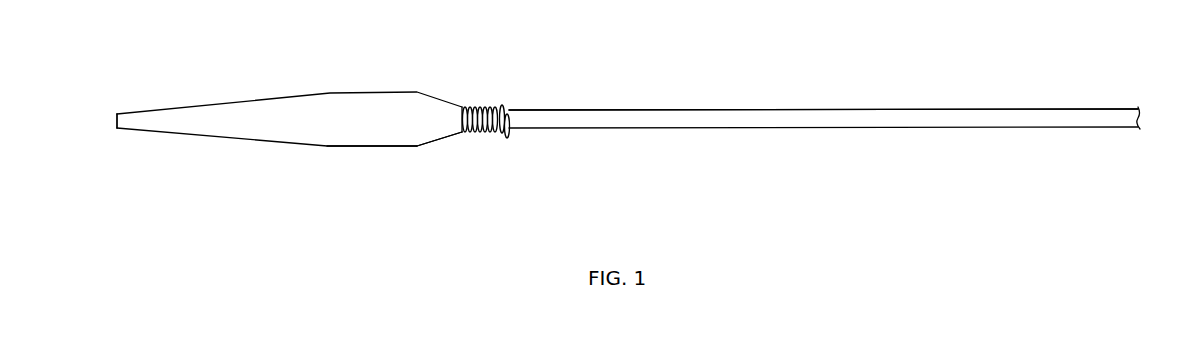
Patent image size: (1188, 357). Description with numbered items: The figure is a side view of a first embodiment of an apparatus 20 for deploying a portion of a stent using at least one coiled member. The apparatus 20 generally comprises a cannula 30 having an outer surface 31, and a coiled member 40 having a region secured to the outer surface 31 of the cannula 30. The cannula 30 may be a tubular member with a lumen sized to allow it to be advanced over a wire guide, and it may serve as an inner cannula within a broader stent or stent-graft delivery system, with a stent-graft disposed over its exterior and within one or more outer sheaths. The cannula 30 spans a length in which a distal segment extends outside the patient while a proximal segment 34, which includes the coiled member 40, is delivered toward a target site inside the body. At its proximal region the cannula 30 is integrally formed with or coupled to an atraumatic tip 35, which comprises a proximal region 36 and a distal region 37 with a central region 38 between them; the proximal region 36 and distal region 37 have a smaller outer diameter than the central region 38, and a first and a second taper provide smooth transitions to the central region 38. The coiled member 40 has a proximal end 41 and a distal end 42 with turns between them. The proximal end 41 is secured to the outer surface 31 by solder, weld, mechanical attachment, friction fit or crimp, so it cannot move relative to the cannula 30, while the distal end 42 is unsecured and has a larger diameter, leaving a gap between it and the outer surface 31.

The apparatus 20 is at (366, 63).
The cannula 30 is at (1044, 117).
The outer surface 31 is at (909, 108).
The proximal segment 34 is at (477, 107).
The atraumatic tip 35 is at (303, 121).
The proximal region 36 is at (132, 120).
The distal region 37 is at (434, 145).
The central region 38 is at (364, 147).
The coiled member 40 is at (490, 98).
The proximal end 41 is at (464, 133).
The distal end 42 is at (509, 118).